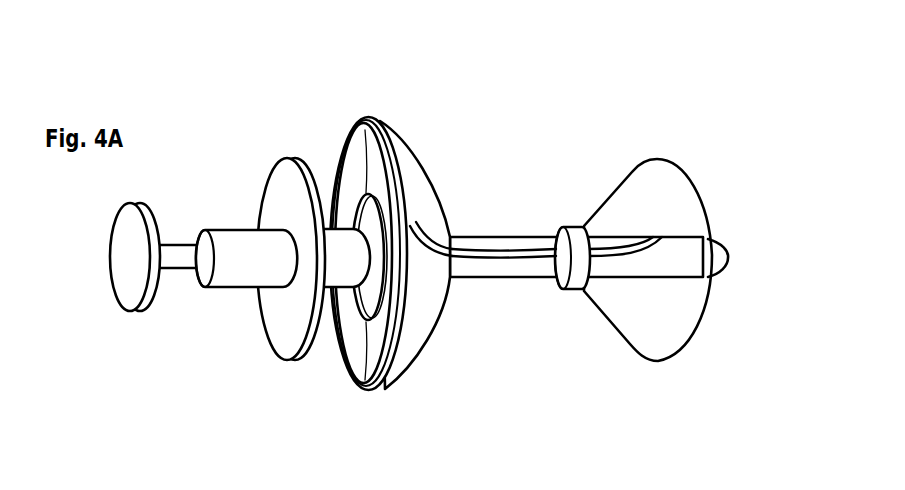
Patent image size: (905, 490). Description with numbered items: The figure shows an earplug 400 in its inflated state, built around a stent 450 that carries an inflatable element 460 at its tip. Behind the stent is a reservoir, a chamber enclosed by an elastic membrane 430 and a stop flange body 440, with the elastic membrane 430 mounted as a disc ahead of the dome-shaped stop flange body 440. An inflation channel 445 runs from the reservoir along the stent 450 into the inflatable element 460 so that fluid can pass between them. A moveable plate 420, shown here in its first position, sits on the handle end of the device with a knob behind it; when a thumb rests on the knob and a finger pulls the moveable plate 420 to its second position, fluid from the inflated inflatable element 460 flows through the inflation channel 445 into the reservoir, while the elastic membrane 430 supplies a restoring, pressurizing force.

The earplug 400 is at (510, 152).
The moveable plate 420 is at (280, 215).
The elastic membrane 430 is at (353, 172).
The stop flange body 440 is at (430, 200).
The inflation channel 445 is at (512, 268).
The stent 450 is at (523, 245).
The inflatable element 460 is at (665, 178).